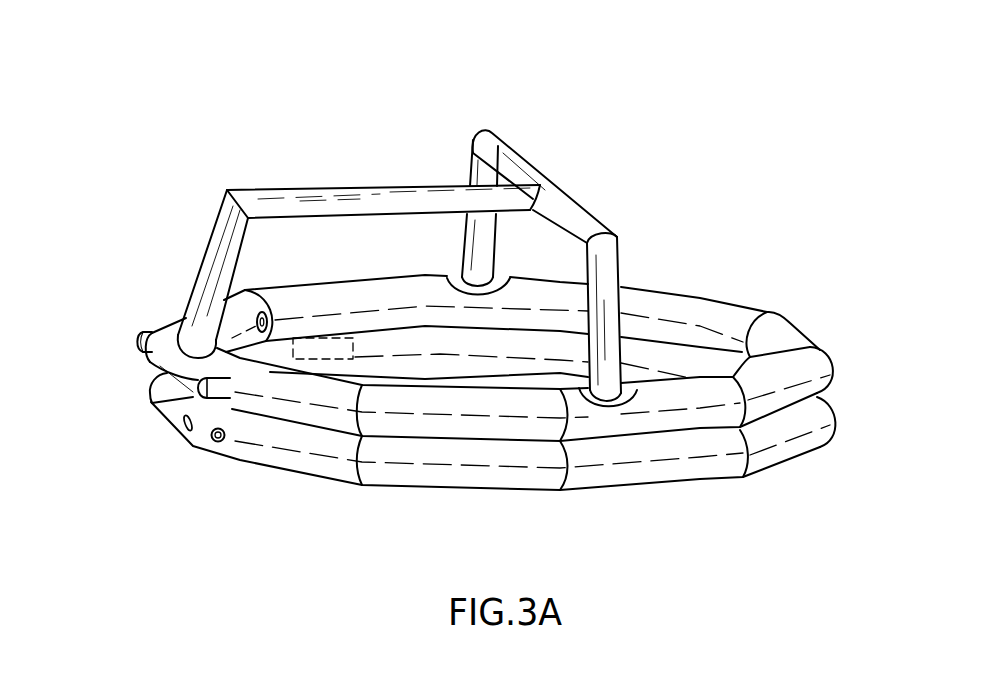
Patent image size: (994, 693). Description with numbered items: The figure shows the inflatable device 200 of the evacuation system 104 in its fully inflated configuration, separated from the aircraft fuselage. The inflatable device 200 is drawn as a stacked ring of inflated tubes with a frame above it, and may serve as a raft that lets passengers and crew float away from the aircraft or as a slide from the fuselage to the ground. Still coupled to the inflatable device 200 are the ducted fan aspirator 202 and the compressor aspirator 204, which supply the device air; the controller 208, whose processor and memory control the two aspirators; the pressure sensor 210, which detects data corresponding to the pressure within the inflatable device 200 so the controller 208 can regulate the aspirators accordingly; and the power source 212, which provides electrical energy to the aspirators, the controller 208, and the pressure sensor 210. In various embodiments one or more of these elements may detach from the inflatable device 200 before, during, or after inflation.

The evacuation system 104 is at (463, 93).
The inflatable device 200 is at (666, 295).
The ducted fan aspirator 202 is at (170, 410).
The compressor aspirator 204 is at (137, 343).
The controller 208 is at (265, 313).
The pressure sensor 210 is at (224, 442).
The power source 212 is at (323, 349).